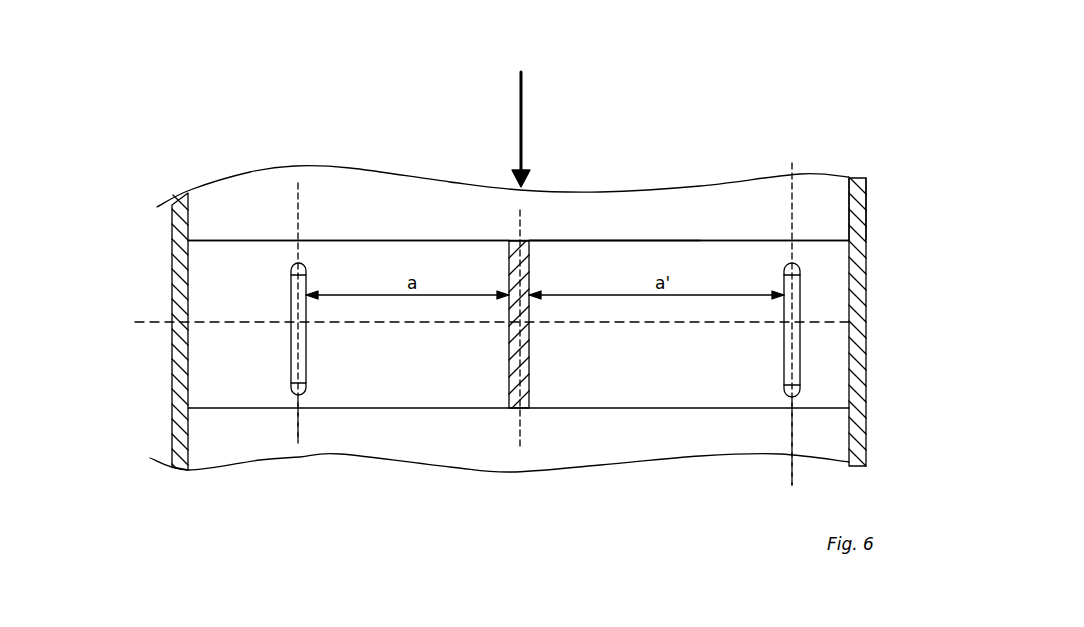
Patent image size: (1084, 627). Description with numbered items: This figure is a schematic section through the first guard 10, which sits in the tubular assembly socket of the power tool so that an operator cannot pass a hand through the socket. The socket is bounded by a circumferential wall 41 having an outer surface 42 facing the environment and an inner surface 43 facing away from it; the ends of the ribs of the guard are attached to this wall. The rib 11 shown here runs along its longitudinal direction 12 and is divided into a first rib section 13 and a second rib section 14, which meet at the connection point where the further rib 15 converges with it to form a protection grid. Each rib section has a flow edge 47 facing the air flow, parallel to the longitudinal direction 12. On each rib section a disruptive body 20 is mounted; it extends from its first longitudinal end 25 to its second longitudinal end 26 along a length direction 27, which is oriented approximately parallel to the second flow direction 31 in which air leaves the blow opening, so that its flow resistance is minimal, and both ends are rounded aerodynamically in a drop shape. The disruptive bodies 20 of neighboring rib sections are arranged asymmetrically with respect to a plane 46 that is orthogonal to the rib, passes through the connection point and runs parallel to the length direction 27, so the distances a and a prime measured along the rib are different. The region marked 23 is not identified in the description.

The first guard 10 is at (247, 228).
The rib 11 is at (405, 240).
The longitudinal direction 12 is at (153, 320).
The first rib section 13 is at (343, 240).
The second rib section 14 is at (683, 240).
The further rib 15 is at (508, 383).
The disruptive body 20 is at (289, 365).
The flow channel 23 is at (457, 349).
The first longitudinal end 25 is at (300, 396).
The second longitudinal end 26 is at (296, 262).
The length direction 27 is at (297, 425).
The second flow direction 31 is at (522, 92).
The circumferential wall 41 is at (866, 330).
The outer surface 42 is at (866, 238).
The inner surface 43 is at (849, 201).
The plane 46 is at (520, 438).
The flow edge 47 is at (585, 240).